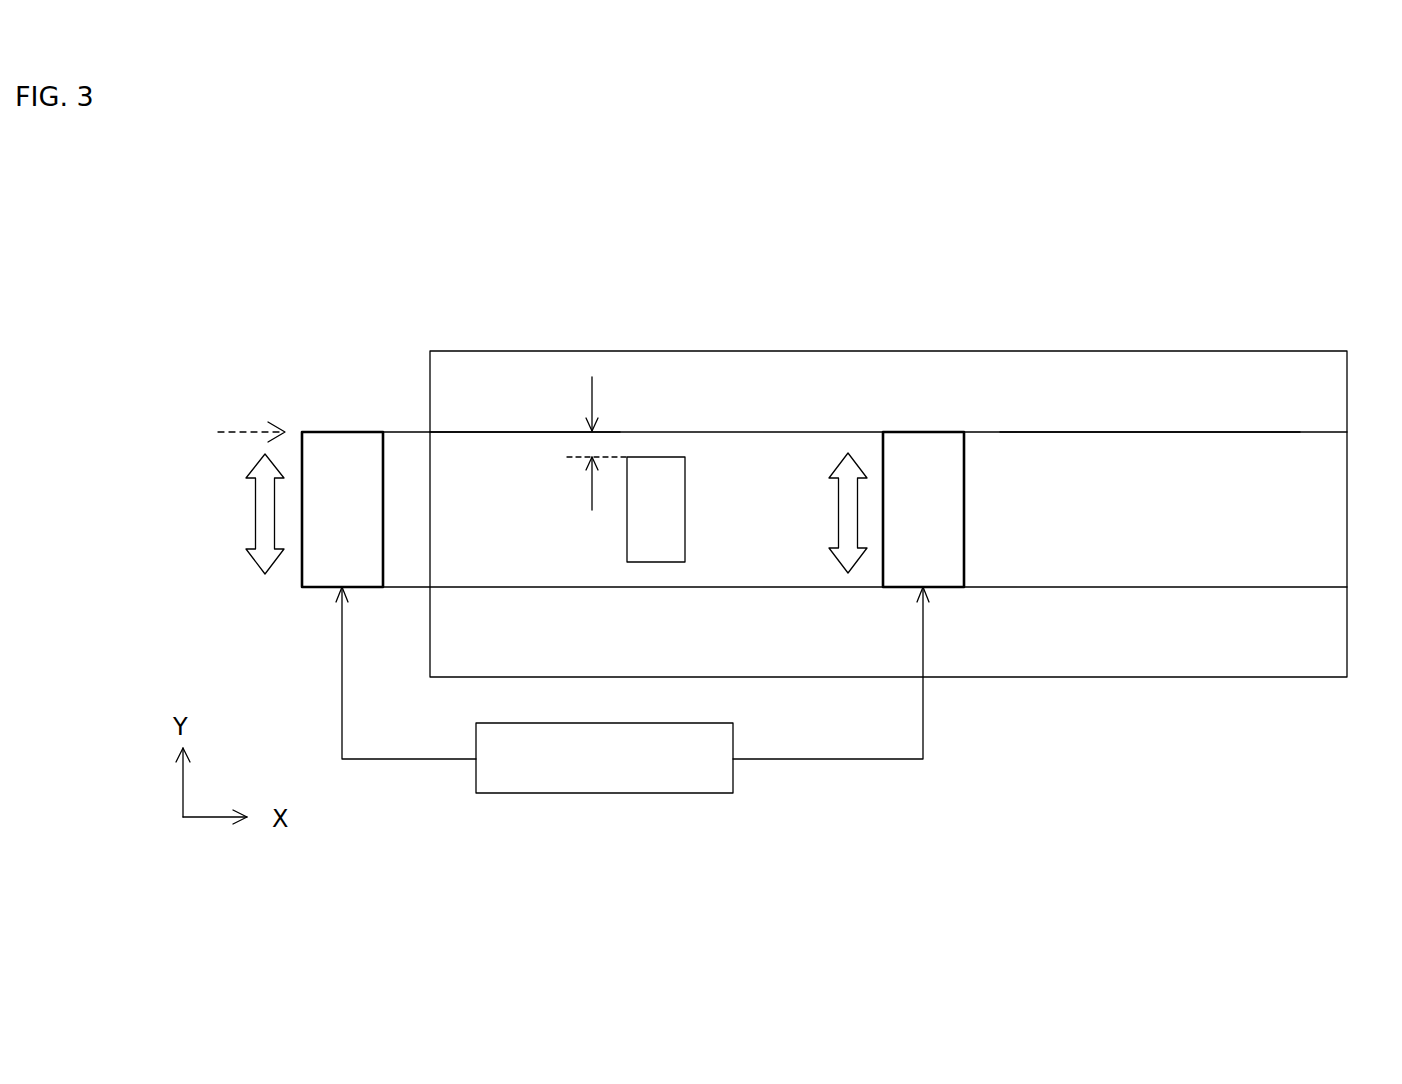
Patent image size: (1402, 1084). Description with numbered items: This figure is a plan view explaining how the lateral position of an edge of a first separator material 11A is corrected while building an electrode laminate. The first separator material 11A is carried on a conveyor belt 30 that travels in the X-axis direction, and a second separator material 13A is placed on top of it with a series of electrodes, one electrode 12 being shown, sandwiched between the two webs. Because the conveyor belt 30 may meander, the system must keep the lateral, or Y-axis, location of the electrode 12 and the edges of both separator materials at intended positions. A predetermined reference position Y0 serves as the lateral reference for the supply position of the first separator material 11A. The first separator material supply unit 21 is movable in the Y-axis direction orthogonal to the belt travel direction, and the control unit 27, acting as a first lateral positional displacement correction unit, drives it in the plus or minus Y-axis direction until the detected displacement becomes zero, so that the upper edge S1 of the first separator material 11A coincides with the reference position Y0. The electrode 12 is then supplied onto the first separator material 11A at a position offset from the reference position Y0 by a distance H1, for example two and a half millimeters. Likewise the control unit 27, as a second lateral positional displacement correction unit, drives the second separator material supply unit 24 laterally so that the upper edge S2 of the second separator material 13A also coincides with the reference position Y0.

The conveyor belt 30 is at (1318, 351).
The first separator material 11A is at (815, 432).
The second separator material 13A is at (1245, 432).
The upper edge of the first separator material S1 is at (530, 432).
The upper edge of the second separator material S2 is at (1137, 432).
The first separator material supply unit 21 is at (383, 467).
The second separator material supply unit 24 is at (965, 467).
The electrode 12 is at (662, 457).
The distance H1 is at (578, 446).
The predetermined reference position Y0 is at (230, 433).
The control unit 27 is at (663, 793).